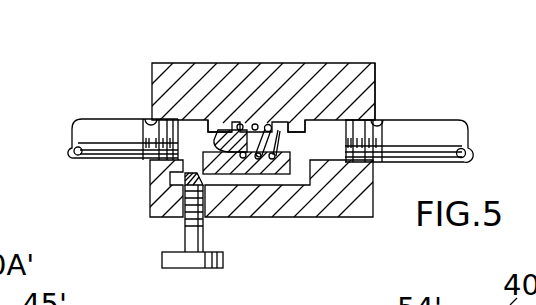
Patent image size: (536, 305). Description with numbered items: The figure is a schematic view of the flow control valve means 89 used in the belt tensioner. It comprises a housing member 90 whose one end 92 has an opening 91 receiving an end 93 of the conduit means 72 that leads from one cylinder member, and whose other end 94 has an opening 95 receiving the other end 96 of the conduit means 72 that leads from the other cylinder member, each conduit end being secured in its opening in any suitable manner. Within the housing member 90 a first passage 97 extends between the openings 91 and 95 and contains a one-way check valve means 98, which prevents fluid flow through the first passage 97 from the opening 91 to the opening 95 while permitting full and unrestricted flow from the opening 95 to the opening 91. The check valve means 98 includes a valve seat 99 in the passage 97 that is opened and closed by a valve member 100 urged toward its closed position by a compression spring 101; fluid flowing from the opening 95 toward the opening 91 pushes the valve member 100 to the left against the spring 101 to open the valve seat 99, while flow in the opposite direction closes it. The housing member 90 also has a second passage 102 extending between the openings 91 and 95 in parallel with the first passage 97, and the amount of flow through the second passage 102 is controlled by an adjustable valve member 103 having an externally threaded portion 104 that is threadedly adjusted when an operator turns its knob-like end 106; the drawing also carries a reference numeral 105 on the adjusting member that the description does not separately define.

The conduit means 72 is at (445, 122).
The flow control valve means 89 is at (378, 76).
The housing member 90 is at (338, 208).
The opening 91 is at (384, 120).
The end 92 is at (376, 64).
The conduit end 93 is at (378, 156).
The other end 94 is at (163, 63).
The opening 95 is at (152, 118).
The conduit end 96 is at (143, 158).
The first passage 97 is at (306, 122).
The one-way check valve means 98 is at (254, 158).
The valve seat 99 is at (218, 138).
The valve member 100 is at (232, 128).
The compression spring 101 is at (259, 128).
The second passage 102 is at (277, 180).
The adjustable valve member 103 is at (190, 182).
The externally threaded portion 104 is at (183, 215).
The screw shank 105 is at (200, 229).
The knob-like end 106 is at (203, 266).